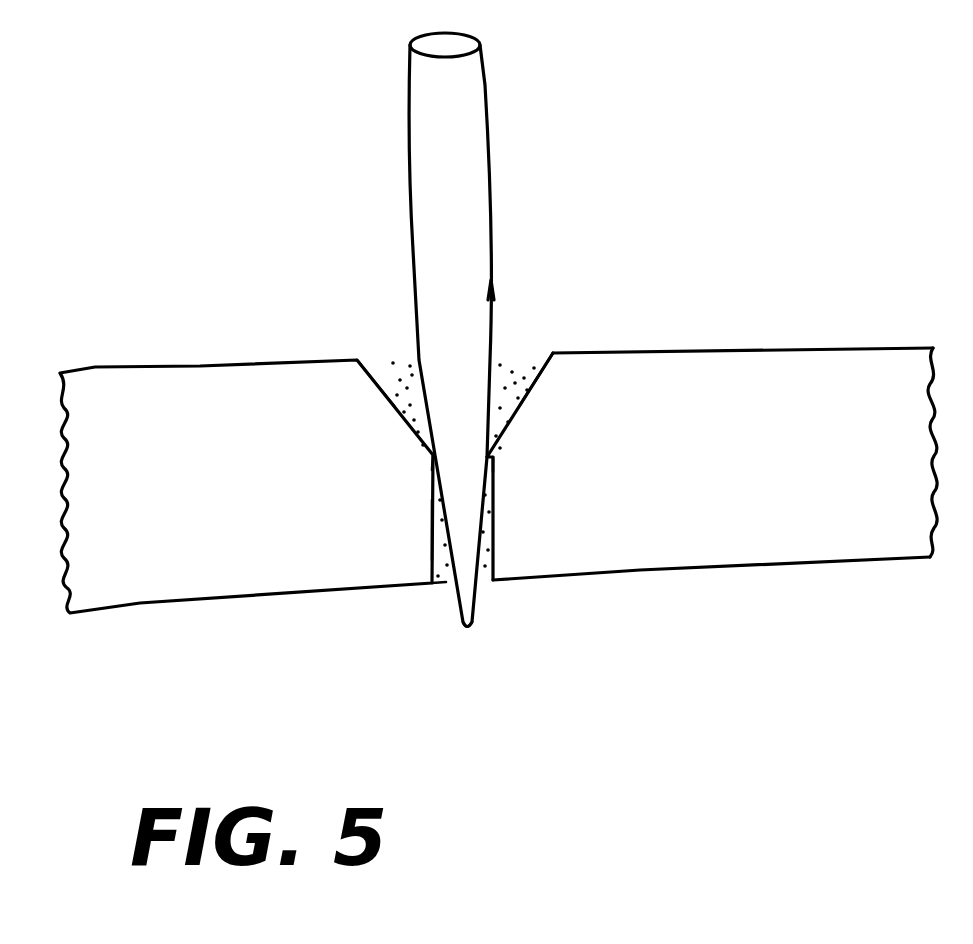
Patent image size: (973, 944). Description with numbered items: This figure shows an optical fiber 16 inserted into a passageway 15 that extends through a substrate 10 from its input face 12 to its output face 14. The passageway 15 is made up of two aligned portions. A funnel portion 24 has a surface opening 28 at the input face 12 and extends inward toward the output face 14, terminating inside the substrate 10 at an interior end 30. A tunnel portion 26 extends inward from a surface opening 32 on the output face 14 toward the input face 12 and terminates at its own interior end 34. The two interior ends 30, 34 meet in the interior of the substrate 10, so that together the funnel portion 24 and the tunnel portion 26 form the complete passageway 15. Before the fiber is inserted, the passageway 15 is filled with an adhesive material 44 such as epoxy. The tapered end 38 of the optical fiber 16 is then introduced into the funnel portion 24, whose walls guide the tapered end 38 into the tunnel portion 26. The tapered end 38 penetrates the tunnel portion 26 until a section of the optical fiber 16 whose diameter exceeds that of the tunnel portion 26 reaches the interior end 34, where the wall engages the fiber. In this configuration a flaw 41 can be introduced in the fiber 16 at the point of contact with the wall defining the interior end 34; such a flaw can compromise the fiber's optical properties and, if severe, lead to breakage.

The substrate 10 is at (766, 467).
The input face 12 is at (808, 348).
The output face 14 is at (813, 562).
The passageway 15 is at (511, 376).
The optical fiber 16 is at (485, 87).
The funnel portion 24 is at (549, 405).
The tunnel portion 26 is at (425, 528).
The surface opening 28 is at (385, 345).
The interior end 30 is at (412, 448).
The surface opening 32 is at (445, 598).
The interior end 34 is at (501, 465).
The tapered end 38 is at (473, 607).
The flaw 41 is at (470, 455).
The adhesive material 44 is at (398, 378).